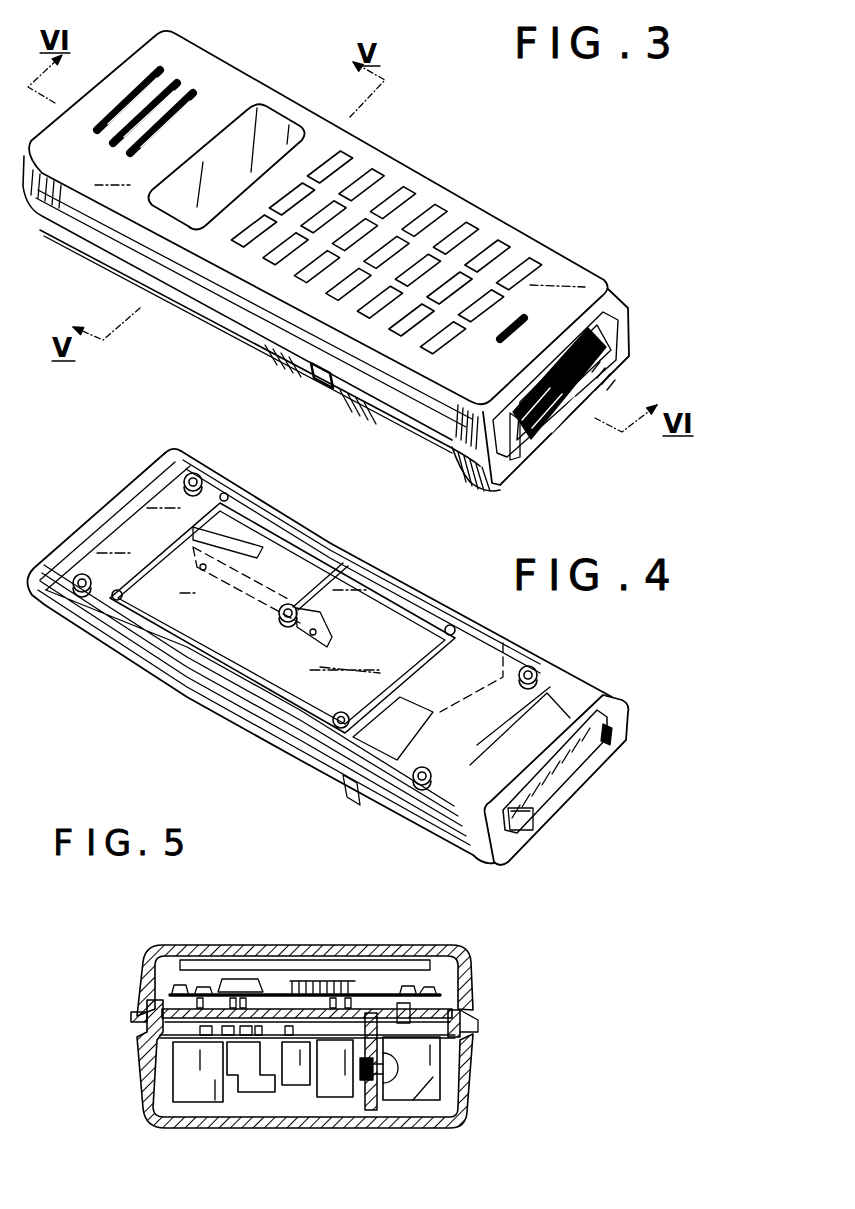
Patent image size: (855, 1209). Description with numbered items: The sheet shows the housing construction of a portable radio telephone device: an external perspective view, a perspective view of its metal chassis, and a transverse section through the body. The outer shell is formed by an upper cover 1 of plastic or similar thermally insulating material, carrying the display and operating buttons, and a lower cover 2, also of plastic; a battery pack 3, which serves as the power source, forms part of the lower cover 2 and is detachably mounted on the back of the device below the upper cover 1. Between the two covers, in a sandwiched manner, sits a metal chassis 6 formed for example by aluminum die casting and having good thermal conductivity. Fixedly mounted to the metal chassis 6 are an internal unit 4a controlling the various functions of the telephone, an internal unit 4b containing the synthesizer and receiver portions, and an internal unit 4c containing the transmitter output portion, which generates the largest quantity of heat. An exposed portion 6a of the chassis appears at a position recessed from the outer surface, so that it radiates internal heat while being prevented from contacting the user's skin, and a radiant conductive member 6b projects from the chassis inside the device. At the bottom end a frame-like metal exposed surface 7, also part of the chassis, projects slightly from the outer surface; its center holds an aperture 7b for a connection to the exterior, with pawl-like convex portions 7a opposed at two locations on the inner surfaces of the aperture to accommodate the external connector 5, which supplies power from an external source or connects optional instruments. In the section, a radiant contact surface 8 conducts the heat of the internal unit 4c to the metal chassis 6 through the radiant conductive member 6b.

In FIG. 3, the upper cover 1 is at (277, 103).
In FIG. 5, the upper cover 1 is at (192, 947).
In FIG. 3, the lower cover 2 is at (124, 277).
In FIG. 5, the lower cover 2 is at (440, 1127).
In FIG. 3, the battery pack 3 is at (413, 442).
In FIG. 5, the internal unit 4a is at (290, 991).
In FIG. 5, the internal unit 4b is at (291, 1070).
In FIG. 5, the internal unit 4c is at (433, 1077).
In FIG. 3, the external connector 5 is at (580, 388).
In FIG. 3, the metal chassis 6 is at (312, 385).
In FIG. 4, the metal chassis 6 is at (107, 527).
In FIG. 5, the metal chassis 6 is at (367, 1007).
In FIG. 3, the exposed portion 6a is at (450, 457).
In FIG. 4, the exposed portion 6a is at (200, 687).
In FIG. 5, the exposed portion 6a is at (146, 1019).
In FIG. 5, the radiant conductive member 6b is at (365, 1093).
In FIG. 3, the frame-like metal exposed surface 7 is at (614, 350).
In FIG. 4, the frame-like metal exposed surface 7 is at (587, 787).
In FIG. 3, the pawl-like convex portions 7a is at (620, 360).
In FIG. 4, the pawl-like convex portions 7a is at (600, 748).
In FIG. 4, the aperture 7b is at (530, 822).
In FIG. 5, the radiant contact surface 8 is at (390, 1087).